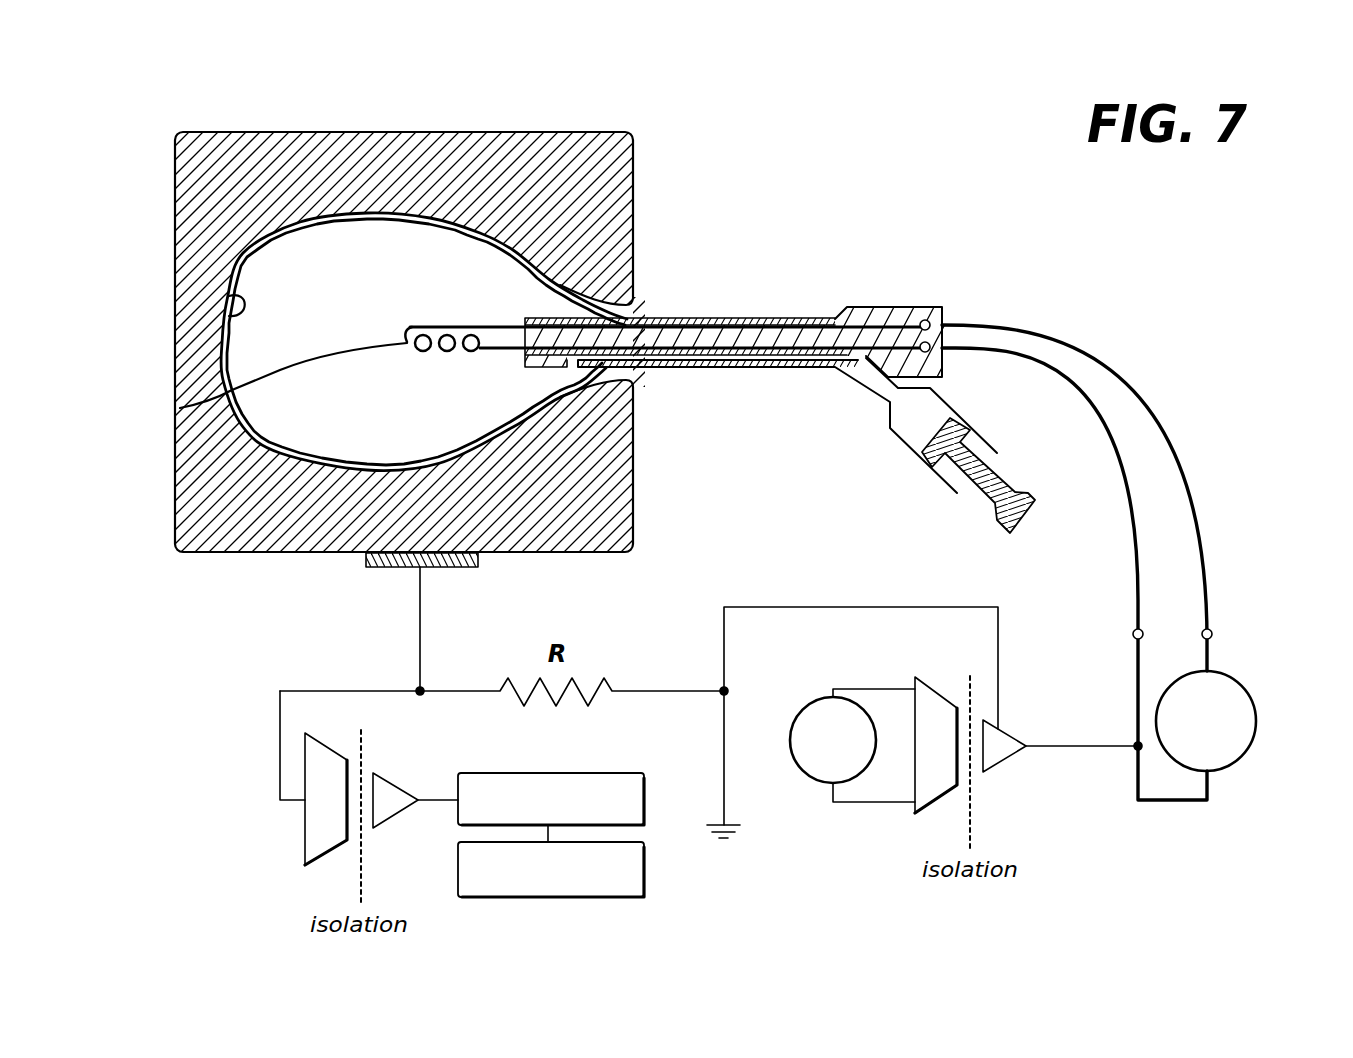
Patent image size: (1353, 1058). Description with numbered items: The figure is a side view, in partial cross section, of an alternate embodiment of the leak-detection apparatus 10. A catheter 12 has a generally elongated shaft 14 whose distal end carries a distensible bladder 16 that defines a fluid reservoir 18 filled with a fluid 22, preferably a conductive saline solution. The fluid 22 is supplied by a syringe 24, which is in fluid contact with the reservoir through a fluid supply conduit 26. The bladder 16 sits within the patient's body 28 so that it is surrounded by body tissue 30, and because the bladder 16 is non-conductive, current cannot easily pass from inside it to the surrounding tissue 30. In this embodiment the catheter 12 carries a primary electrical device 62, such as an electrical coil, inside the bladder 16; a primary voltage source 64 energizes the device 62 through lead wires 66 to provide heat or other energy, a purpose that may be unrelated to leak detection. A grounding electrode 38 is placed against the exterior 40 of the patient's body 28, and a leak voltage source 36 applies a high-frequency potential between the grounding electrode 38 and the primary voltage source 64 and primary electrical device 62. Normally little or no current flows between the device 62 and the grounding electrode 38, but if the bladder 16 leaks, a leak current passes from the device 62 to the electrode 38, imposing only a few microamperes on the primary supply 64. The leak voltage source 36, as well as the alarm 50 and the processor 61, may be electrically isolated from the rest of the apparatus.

The apparatus 10 is at (867, 143).
The catheter 12 is at (787, 318).
The shaft 14 is at (678, 318).
The bladder 16 is at (232, 320).
The fluid reservoir 18 is at (381, 281).
The fluid 22 is at (329, 243).
The syringe 24 is at (908, 450).
The fluid supply conduit 26 is at (735, 357).
The patient's body 28 is at (605, 131).
The body tissue 30 is at (538, 150).
The leak voltage source 36 is at (807, 697).
The grounding electrode 38 is at (383, 568).
The exterior of the patient's body 40 is at (272, 553).
The alarm 50 is at (645, 876).
The processor 61 is at (620, 771).
The primary electrical device 62 is at (180, 408).
The primary voltage source 64 is at (1256, 723).
The lead wires 66 is at (1180, 455).